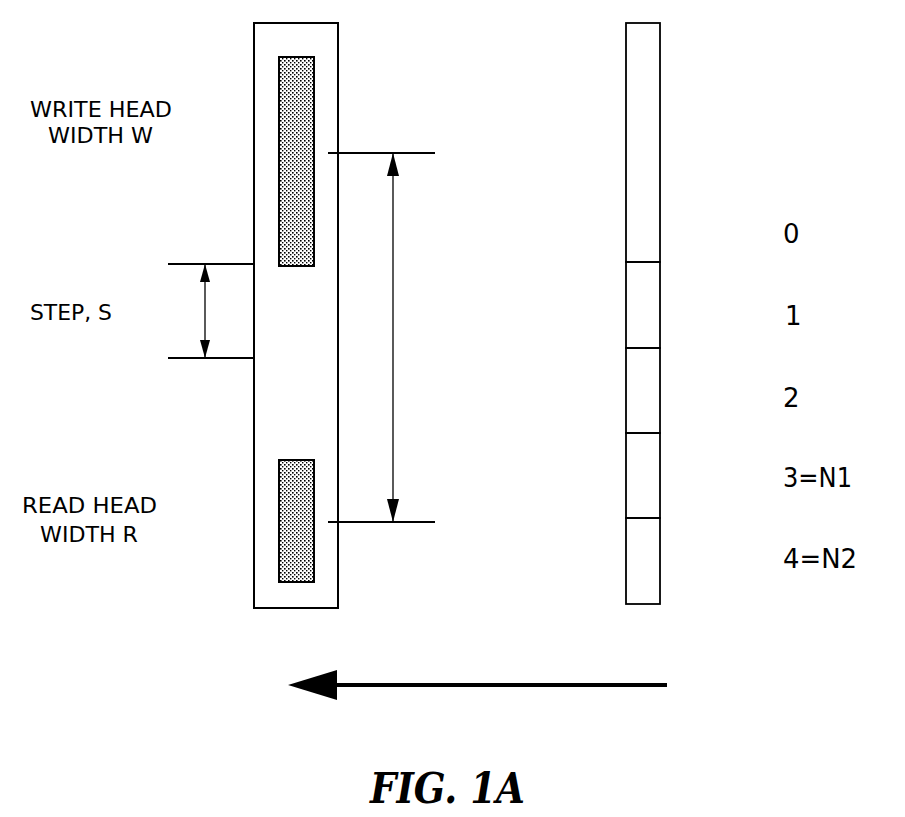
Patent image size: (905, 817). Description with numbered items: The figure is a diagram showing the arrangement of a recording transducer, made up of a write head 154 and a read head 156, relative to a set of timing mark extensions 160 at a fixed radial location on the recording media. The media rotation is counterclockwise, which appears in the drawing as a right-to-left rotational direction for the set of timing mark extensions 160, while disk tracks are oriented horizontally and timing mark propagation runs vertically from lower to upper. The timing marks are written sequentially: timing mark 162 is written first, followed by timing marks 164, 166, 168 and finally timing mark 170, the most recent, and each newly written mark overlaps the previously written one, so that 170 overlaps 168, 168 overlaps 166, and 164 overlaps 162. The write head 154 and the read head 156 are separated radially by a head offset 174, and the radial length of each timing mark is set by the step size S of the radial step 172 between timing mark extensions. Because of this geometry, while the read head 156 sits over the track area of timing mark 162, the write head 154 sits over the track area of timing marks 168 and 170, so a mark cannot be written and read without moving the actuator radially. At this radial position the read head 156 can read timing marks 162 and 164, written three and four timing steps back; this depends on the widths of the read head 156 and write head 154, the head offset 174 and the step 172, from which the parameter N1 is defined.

The write head 154 is at (275, 152).
The read head 156 is at (275, 518).
The set of timing mark extensions 160 is at (507, 680).
The timing mark 162 is at (653, 570).
The timing mark 164 is at (653, 480).
The timing mark 166 is at (652, 392).
The timing mark 168 is at (652, 303).
The timing mark 170 is at (648, 183).
The radial step between timing mark extensions 172 is at (205, 313).
The radial separation between read head and write head 174 is at (394, 333).